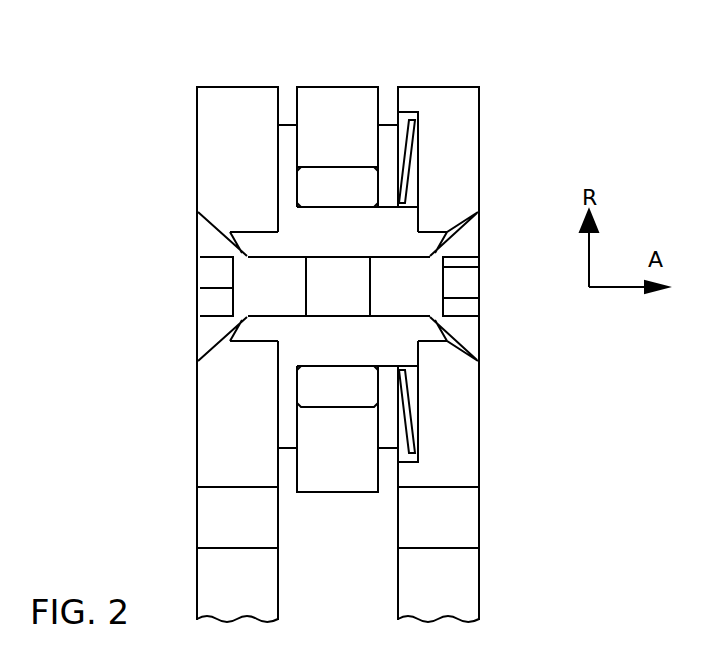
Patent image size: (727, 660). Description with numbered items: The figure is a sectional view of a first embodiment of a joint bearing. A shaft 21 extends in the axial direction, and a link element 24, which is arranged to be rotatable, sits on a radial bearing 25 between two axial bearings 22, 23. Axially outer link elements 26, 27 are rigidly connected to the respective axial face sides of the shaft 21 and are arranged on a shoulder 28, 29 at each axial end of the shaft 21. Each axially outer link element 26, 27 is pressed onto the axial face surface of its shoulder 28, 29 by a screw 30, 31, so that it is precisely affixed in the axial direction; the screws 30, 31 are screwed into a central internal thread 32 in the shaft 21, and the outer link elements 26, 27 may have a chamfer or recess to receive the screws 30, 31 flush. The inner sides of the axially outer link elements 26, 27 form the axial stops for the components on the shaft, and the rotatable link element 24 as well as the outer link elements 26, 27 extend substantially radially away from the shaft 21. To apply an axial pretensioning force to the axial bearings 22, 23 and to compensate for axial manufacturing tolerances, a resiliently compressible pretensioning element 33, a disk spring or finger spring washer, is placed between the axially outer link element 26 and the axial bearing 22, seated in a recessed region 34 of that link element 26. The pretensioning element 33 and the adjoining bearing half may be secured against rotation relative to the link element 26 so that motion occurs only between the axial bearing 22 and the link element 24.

The shaft 21 is at (352, 227).
The axial bearing 22 is at (388, 137).
The axial bearing 23 is at (289, 137).
The link element 24 is at (327, 100).
The radial bearing 25 is at (362, 388).
The axially outer link element 26 is at (468, 168).
The axially outer link element 27 is at (212, 130).
The shoulder 28 is at (418, 218).
The shoulder 29 is at (273, 220).
The screw 30 is at (418, 293).
The screw 31 is at (247, 275).
The central internal thread 32 is at (410, 262).
The pretensioning element 33 is at (408, 152).
The recessed region 34 is at (405, 405).